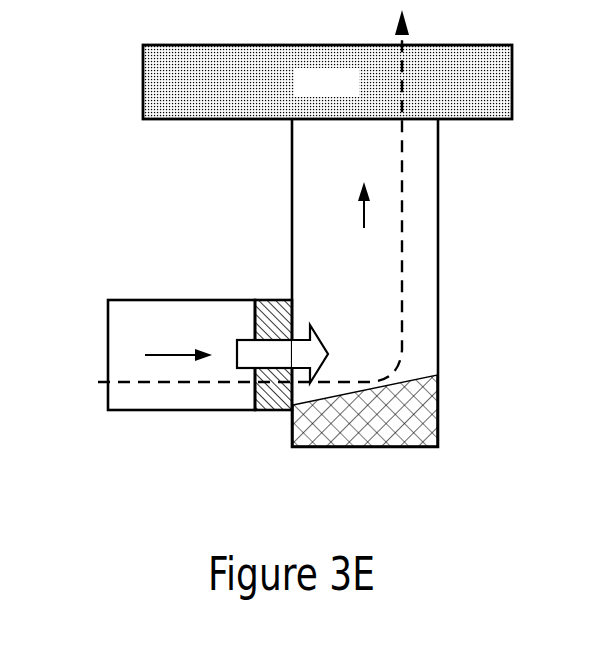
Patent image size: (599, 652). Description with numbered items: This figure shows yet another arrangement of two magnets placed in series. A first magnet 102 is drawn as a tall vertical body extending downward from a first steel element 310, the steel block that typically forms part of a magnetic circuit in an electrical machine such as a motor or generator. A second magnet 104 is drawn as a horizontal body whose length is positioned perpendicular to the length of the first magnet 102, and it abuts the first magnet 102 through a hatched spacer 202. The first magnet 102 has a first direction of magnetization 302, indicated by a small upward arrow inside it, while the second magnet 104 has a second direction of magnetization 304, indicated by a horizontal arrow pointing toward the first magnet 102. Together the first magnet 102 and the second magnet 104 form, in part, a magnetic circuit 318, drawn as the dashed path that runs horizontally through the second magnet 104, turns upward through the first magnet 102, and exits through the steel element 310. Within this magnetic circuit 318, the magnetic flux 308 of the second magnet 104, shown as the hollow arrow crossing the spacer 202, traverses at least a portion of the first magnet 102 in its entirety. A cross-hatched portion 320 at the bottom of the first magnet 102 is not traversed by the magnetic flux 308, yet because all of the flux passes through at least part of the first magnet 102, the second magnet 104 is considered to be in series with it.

The first steel element 310 is at (143, 82).
The first magnet 102 is at (438, 328).
The magnetic circuit 318 is at (402, 178).
The first direction of magnetization 302 is at (364, 217).
The second magnet 104 is at (108, 323).
The spacer 202 is at (275, 412).
The magnetic flux 308 is at (247, 340).
The second direction of magnetization 304 is at (172, 357).
The portion of the first magnet 320 is at (418, 416).